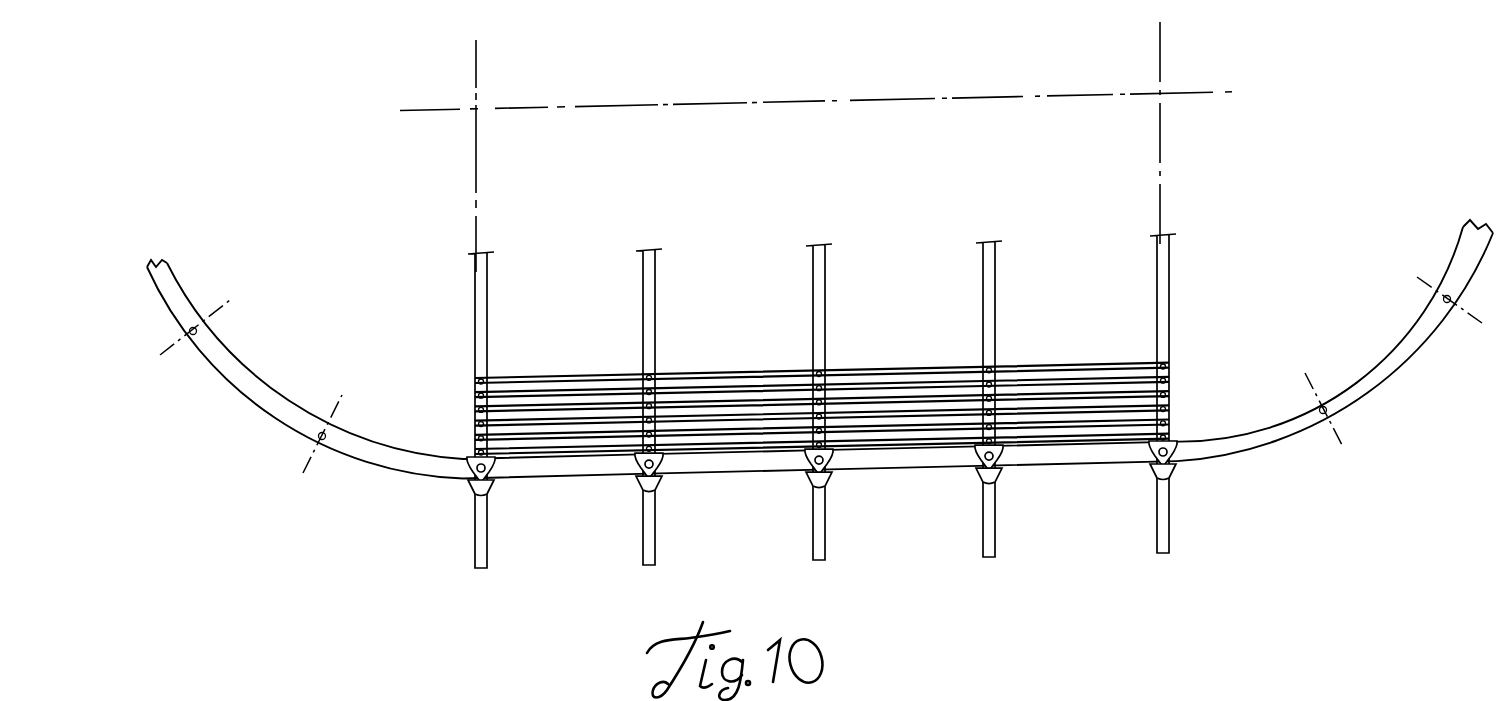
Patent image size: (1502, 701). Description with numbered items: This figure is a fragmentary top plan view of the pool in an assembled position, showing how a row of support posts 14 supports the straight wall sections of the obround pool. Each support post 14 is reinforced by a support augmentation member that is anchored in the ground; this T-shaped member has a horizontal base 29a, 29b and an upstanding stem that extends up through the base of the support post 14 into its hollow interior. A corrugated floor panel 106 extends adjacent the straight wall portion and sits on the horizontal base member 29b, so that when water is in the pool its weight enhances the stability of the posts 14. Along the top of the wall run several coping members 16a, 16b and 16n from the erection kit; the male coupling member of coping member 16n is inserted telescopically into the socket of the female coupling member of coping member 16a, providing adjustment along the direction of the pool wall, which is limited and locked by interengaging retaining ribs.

The support post 14 is at (985, 474).
The coping member 16n is at (722, 470).
The coping member 16a is at (903, 466).
The coping member 16b is at (1075, 463).
The horizontal base 29a is at (646, 537).
The horizontal base member 29b is at (640, 405).
The corrugated floor panel 106 is at (735, 388).